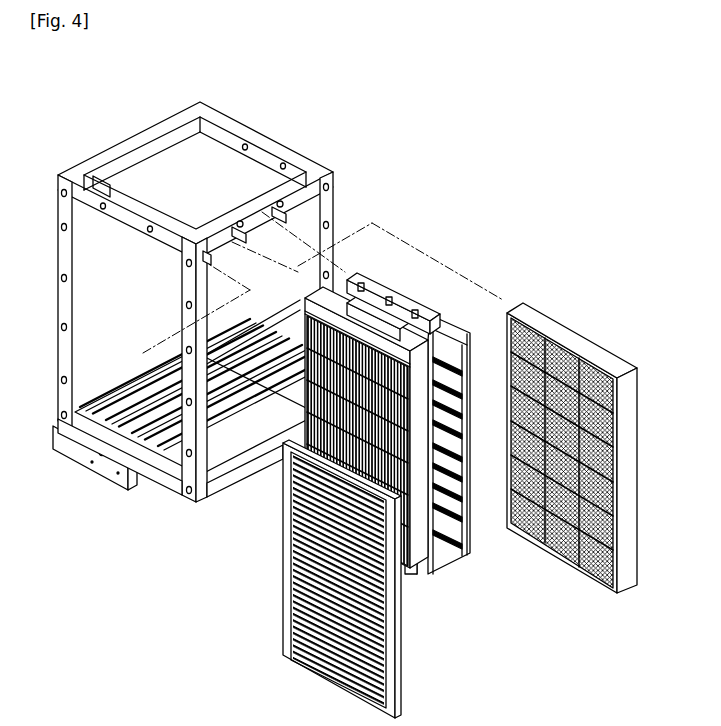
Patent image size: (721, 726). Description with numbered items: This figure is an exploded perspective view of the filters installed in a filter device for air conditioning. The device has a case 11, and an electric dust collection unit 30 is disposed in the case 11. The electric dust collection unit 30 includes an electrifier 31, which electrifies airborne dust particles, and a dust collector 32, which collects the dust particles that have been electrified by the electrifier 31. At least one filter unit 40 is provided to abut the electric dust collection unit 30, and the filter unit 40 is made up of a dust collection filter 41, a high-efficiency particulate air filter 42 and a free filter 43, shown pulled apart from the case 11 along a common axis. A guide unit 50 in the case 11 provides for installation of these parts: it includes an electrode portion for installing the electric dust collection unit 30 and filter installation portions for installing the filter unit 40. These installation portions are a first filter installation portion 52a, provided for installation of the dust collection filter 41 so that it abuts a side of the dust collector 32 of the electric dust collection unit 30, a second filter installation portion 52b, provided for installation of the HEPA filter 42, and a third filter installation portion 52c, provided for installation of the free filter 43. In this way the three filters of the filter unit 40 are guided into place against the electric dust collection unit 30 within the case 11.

The case 11 is at (231, 128).
The electric dust collection unit 30 is at (446, 470).
The electrifier 31 is at (410, 576).
The dust collector 32 is at (432, 559).
The filter unit 40 is at (486, 222).
The dust collection filter 41 is at (420, 300).
The HEPA filter 42 is at (538, 308).
The free filter 43 is at (398, 697).
The guide unit 50 is at (156, 454).
The first filter installation portion 52a is at (247, 233).
The second filter installation portion 52b is at (287, 209).
The third filter installation portion 52c is at (206, 263).